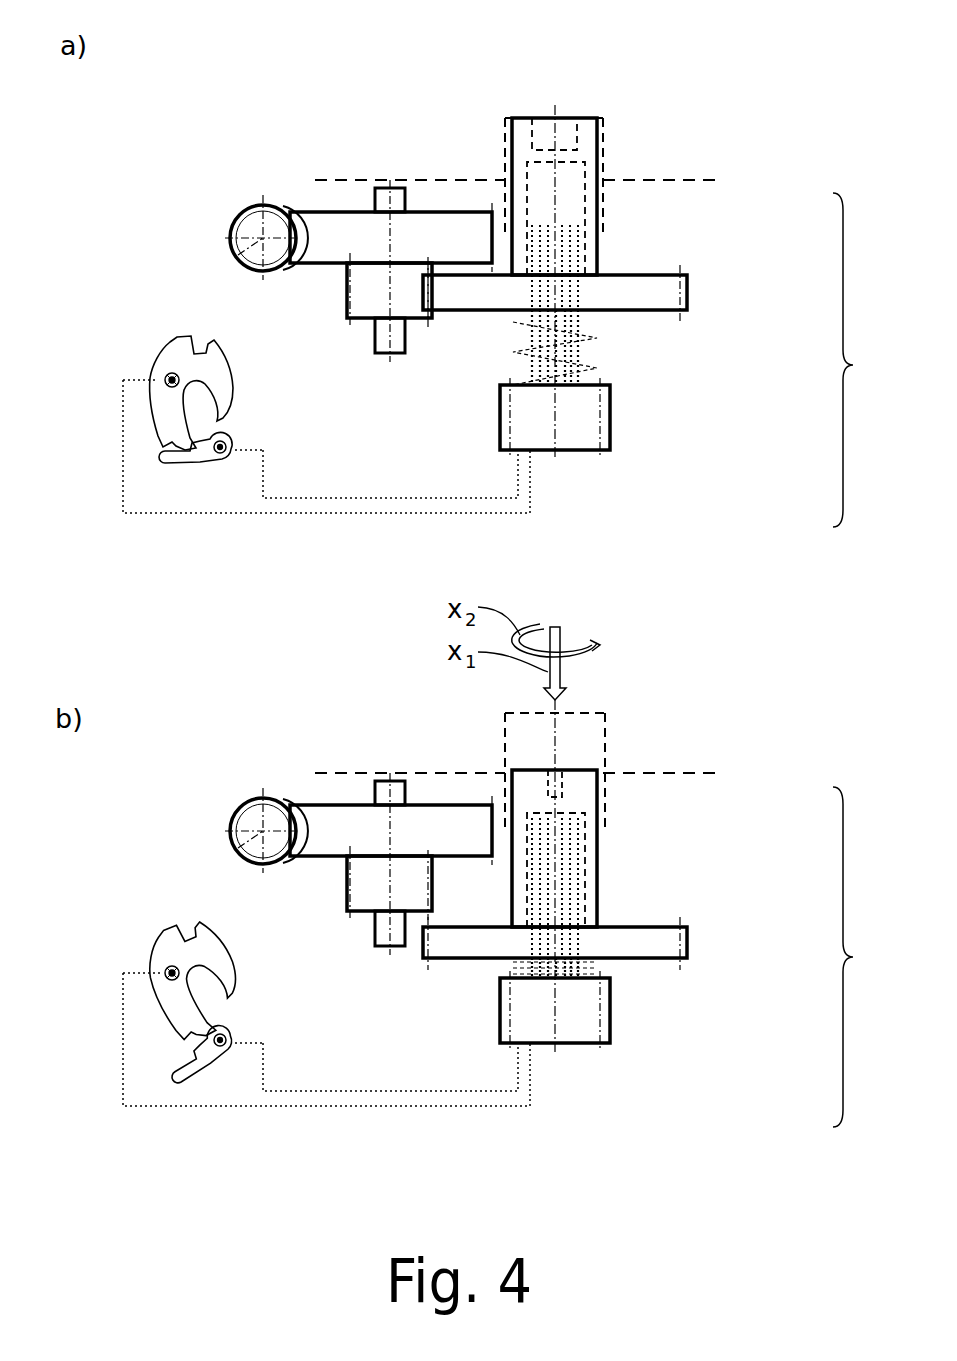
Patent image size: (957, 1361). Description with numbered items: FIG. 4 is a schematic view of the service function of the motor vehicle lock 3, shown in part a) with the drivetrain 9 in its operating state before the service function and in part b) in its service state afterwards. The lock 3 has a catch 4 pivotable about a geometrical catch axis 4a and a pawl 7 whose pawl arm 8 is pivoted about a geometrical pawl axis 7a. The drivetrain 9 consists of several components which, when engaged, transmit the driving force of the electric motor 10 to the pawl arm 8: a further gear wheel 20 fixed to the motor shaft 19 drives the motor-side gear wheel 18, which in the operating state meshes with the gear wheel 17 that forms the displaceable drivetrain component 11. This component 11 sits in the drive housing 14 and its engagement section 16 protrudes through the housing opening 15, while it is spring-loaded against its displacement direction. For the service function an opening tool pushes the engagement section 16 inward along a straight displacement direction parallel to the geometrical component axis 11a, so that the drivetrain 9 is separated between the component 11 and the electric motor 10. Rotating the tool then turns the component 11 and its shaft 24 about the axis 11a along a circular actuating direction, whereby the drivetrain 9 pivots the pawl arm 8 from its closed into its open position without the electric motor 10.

The motor vehicle lock 3 is at (650, 140).
The catch 4 is at (208, 343).
The geometrical catch axis 4a is at (175, 373).
The pawl 7 is at (202, 443).
The geometrical pawl axis 7a is at (227, 443).
The pawl arm 8 is at (188, 462).
The drivetrain 9 is at (852, 660).
The electric motor 10 is at (209, 503).
The displaceable drivetrain component 11 is at (627, 594).
The geometrical component axis 11a is at (557, 425).
The drive housing 14 is at (482, 180).
The housing opening 15 is at (588, 113).
The engagement section 16 is at (641, 538).
The gear wheel 17 is at (620, 283).
The motor-side gear wheel 18 is at (360, 300).
The motor shaft 19 is at (245, 210).
The further gear wheel 20 is at (230, 250).
The shaft 24 is at (583, 137).